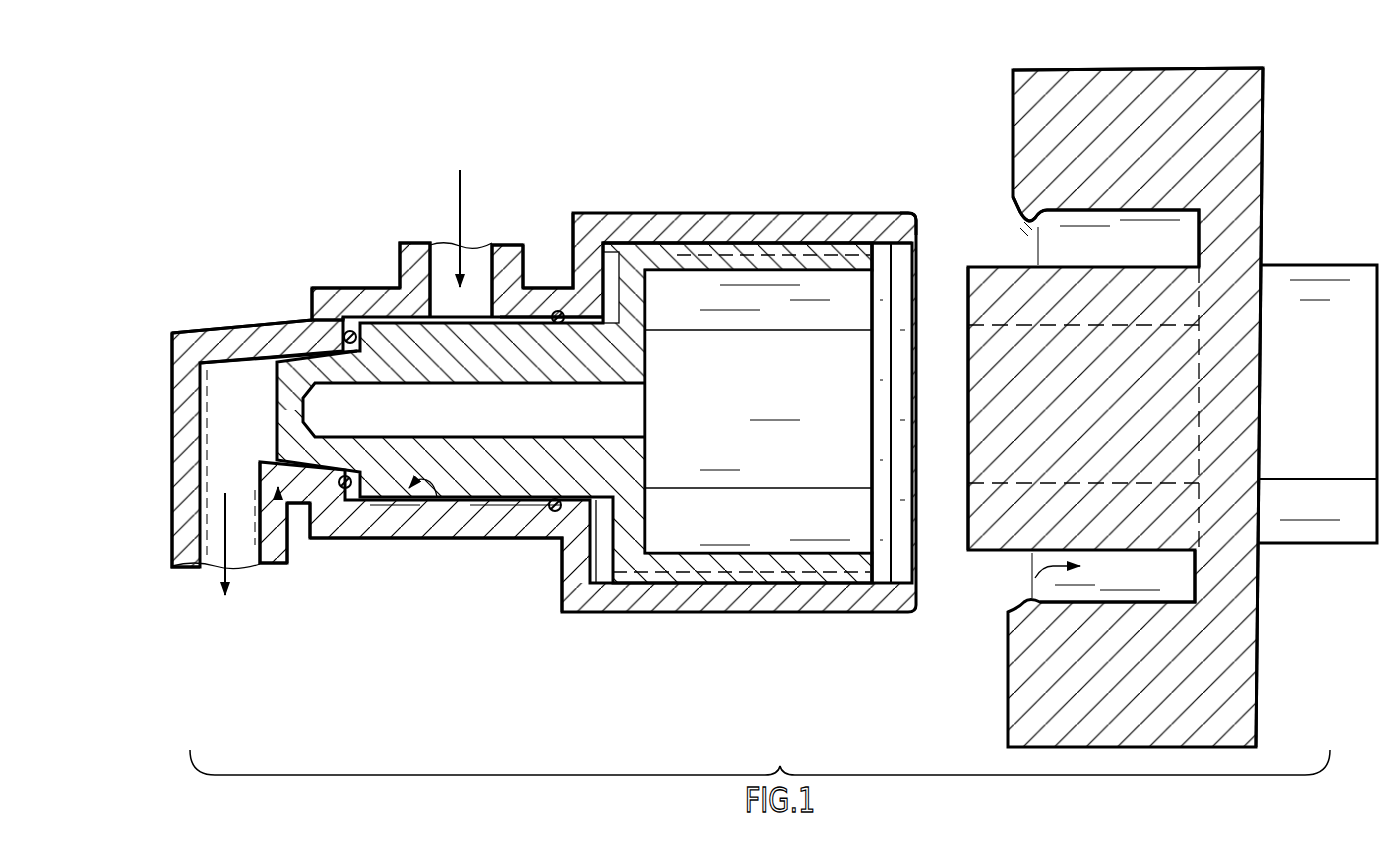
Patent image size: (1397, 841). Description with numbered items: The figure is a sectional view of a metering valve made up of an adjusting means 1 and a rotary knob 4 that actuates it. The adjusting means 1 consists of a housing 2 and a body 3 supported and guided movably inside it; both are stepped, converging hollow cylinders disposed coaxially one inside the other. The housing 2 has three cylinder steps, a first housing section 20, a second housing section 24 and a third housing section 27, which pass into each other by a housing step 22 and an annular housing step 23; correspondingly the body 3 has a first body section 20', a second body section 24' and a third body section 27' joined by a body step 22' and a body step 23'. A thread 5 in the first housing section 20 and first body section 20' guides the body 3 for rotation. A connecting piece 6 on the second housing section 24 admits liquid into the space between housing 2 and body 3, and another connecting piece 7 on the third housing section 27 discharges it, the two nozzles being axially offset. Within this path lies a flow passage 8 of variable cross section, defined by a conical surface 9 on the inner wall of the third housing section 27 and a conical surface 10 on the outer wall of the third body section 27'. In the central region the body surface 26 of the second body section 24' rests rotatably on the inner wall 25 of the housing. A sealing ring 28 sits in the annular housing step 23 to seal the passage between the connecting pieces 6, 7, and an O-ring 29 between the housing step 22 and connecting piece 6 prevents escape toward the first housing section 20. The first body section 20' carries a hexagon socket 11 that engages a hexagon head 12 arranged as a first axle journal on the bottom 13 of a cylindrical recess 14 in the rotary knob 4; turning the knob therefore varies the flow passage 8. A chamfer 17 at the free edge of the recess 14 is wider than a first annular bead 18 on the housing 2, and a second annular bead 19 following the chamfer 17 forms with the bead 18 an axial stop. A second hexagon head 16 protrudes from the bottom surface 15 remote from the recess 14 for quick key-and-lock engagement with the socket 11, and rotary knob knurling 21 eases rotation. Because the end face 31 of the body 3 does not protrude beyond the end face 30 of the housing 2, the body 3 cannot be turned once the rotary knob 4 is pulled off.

The adjusting means 1 is at (570, 128).
The housing 2 is at (537, 303).
The body 3 is at (610, 247).
The rotary knob 4 is at (1122, 142).
The thread 5 is at (782, 240).
The connecting piece 6 is at (507, 263).
The connecting piece 7 is at (182, 568).
The flow passage 8 is at (298, 533).
The conical surface 9 is at (268, 357).
The conical surface 10 is at (278, 548).
The hexagon socket 11 is at (808, 300).
The hexagon head 12 is at (1057, 427).
The bottom 13 is at (1183, 247).
The cylindrical recess 14 is at (1007, 600).
The bottom surface 15 is at (1275, 135).
The hexagon head 16 is at (1317, 293).
The chamfer 17 is at (1002, 195).
The first annular bead 18 is at (906, 195).
The second annular bead 19 is at (1020, 223).
The first housing section 20 is at (588, 382).
The first body section 20' is at (603, 235).
The rotary knob knurling 21 is at (1224, 58).
The housing step 22 is at (560, 224).
The body step 22' is at (629, 374).
The annular housing step 23 is at (309, 263).
The body step 23' is at (340, 282).
The second housing section 24 is at (356, 246).
The second body section 24' is at (408, 254).
The inner wall 25 is at (447, 540).
The body surface 26 is at (443, 297).
The third housing section 27 is at (242, 305).
The third body section 27' is at (278, 312).
The sealing ring 28 is at (347, 486).
The O-ring 29 is at (547, 509).
The end face of the housing 30 is at (884, 522).
The end face of the body 31 is at (926, 537).